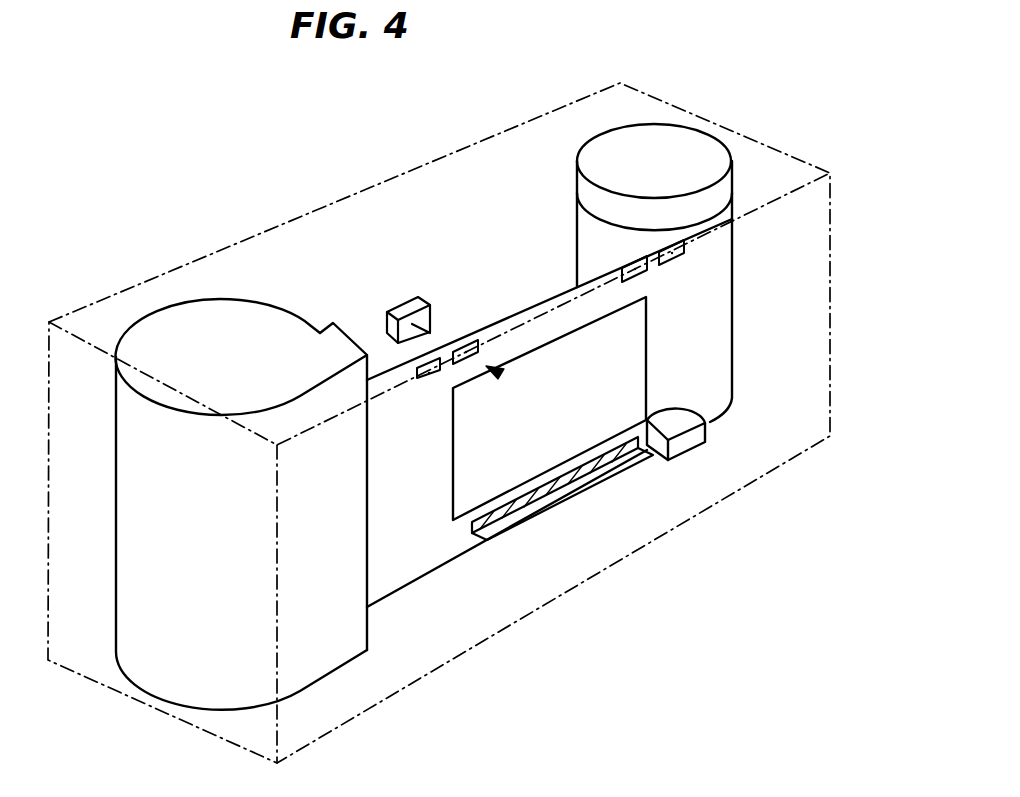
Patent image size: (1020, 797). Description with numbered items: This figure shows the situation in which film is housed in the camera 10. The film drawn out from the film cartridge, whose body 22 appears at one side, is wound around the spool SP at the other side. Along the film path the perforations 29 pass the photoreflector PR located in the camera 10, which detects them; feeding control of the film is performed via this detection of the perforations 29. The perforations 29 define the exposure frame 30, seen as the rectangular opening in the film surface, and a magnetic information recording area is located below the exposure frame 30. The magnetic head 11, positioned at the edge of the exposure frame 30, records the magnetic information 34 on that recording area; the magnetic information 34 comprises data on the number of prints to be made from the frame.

The camera 10 is at (507, 130).
The supply reel 22 is at (172, 675).
The exposure frame 30 is at (647, 354).
The spool SP is at (712, 153).
The magnetic head 11 is at (688, 442).
The magnetic information 34 is at (593, 473).
The photoreflector PR is at (388, 308).
The perforations 29 is at (622, 267).